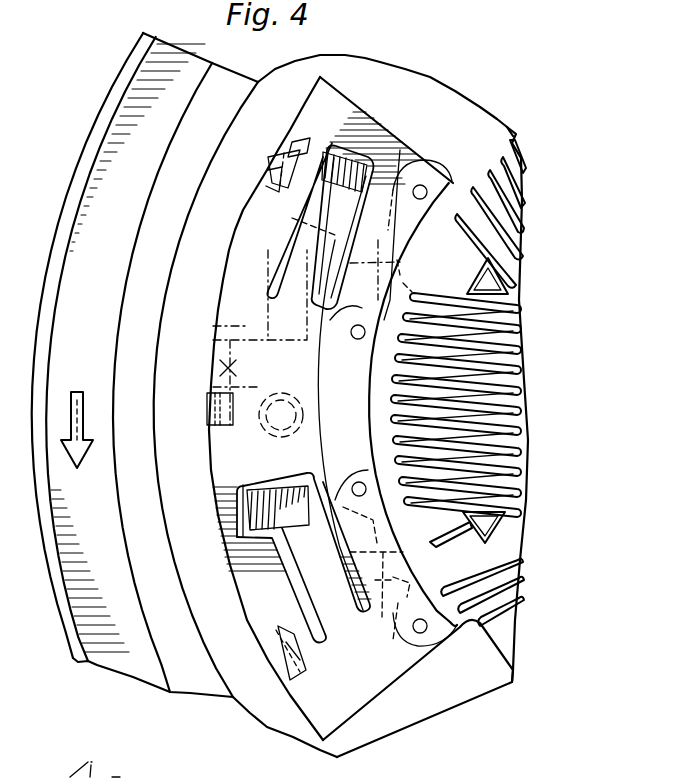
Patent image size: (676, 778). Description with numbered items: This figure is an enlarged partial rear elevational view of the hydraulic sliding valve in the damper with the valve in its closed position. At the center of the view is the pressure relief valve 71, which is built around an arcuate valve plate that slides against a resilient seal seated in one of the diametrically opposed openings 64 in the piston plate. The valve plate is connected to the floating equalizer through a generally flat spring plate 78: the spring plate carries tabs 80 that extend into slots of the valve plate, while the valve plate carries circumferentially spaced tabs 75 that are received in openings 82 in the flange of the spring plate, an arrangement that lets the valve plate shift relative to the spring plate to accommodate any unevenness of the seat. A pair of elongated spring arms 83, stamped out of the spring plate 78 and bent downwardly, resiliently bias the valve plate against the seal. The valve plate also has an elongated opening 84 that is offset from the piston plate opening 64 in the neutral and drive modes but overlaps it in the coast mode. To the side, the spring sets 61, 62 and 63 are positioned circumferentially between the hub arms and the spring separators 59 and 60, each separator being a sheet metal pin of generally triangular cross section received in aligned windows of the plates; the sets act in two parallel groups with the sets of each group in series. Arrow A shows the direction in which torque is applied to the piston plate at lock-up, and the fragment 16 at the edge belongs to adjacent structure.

The spring set 61 is at (511, 136).
The openings 82 is at (304, 139).
The tabs 75 is at (270, 160).
The tabs 80 is at (413, 132).
The spring arms 83 is at (322, 207).
The elongated opening 84 is at (297, 262).
The pressure relief valve 71 is at (216, 271).
The spring plate 78 is at (245, 325).
The spring set 62 is at (440, 387).
The openings 64 is at (263, 432).
The spring divider or separator 59 is at (467, 282).
The spring divider or separator 60 is at (475, 538).
The spring set 63 is at (475, 636).
The arrow A is at (72, 392).
The adjacent part (partial) 16 is at (2, 777).